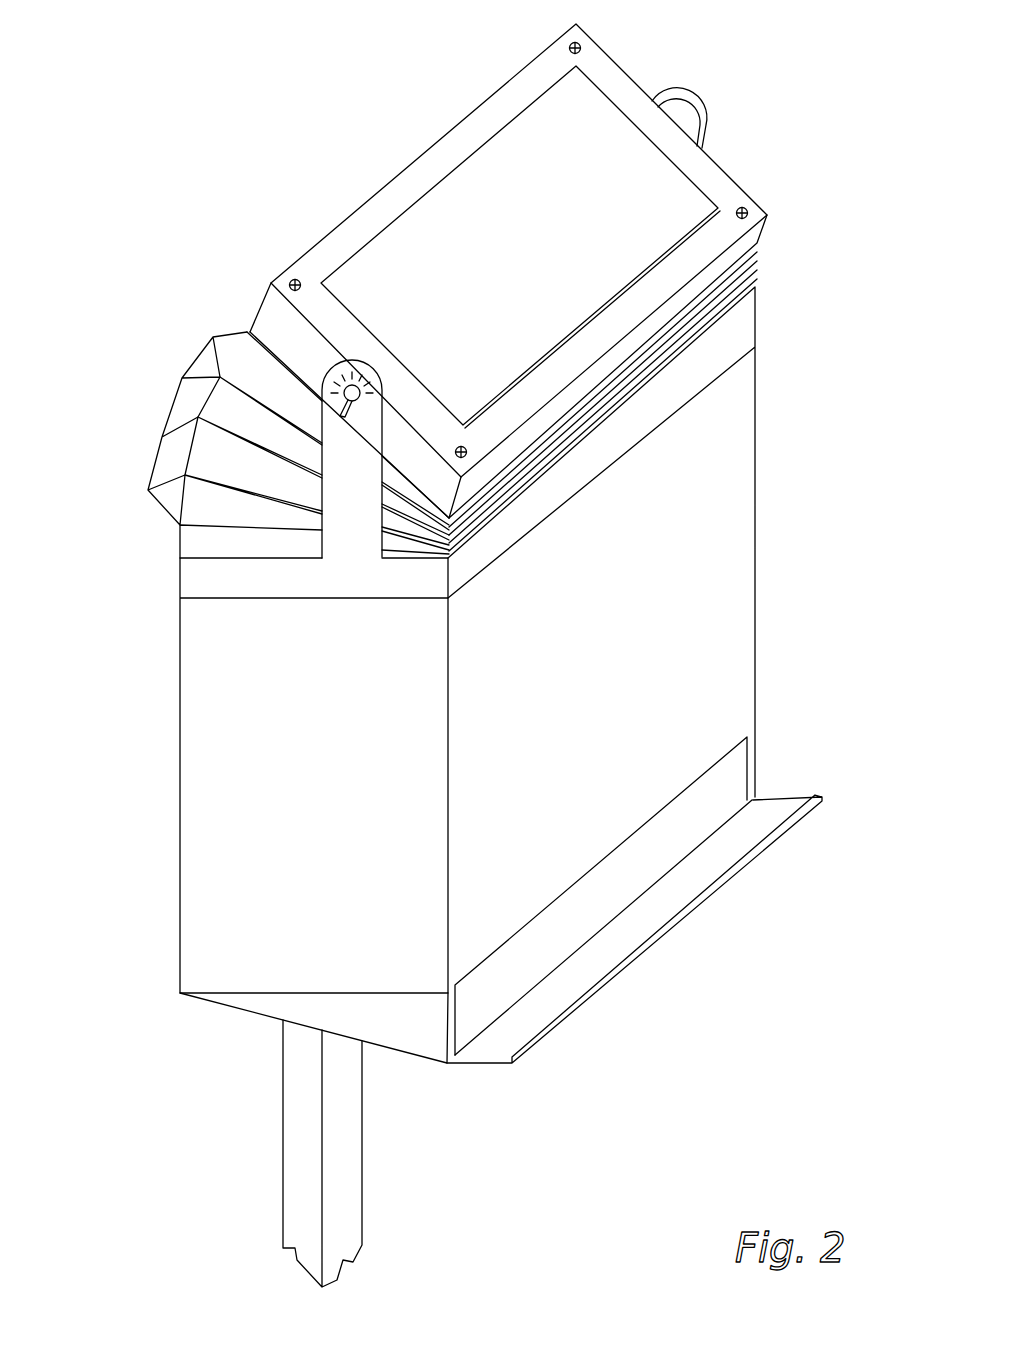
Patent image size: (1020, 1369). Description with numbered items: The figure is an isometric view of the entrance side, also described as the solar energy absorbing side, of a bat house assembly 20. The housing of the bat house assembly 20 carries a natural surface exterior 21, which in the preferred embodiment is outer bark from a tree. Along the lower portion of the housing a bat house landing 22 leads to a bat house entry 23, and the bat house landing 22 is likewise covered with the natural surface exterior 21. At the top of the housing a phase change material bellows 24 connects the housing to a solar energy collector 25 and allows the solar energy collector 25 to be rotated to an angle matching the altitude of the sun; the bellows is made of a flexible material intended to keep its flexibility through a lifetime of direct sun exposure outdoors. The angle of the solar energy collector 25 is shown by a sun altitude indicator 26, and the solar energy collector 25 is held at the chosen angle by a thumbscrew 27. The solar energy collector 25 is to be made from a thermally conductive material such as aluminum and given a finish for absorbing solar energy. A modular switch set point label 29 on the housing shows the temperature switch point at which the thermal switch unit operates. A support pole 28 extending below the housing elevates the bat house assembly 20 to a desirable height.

The bat house assembly 20 is at (450, 655).
The natural surface exterior 21 is at (742, 568).
The bat house landing 22 is at (737, 877).
The bat house entry 23 is at (690, 815).
The phase change material bellows 24 is at (192, 418).
The solar energy collector 25 is at (415, 200).
The sun altitude indicator 26 is at (349, 360).
The thumbscrew 27 is at (253, 333).
The support pole 28 is at (290, 1093).
The modular switch set point label 29 is at (703, 373).